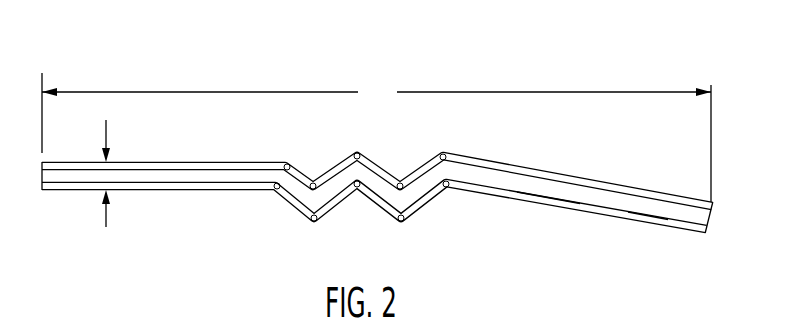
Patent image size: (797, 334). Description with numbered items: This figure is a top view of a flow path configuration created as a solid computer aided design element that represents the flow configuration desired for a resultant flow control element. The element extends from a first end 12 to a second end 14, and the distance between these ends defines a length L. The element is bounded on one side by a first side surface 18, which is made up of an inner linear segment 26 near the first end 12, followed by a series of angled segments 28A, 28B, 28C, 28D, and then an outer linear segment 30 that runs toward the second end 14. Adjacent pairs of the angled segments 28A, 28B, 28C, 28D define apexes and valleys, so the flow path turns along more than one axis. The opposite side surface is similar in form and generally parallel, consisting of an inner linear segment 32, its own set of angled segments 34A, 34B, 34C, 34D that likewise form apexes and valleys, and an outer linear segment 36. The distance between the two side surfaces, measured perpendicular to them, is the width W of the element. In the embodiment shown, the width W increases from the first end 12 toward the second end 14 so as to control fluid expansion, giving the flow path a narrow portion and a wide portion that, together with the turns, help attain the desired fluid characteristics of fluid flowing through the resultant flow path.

The first end 12 is at (383, 197).
The second end 14 is at (716, 231).
The first side surface 18 is at (606, 66).
The inner linear segment 26 is at (204, 162).
The angled segment 28A is at (305, 171).
The angled segment 28B is at (342, 162).
The angled segment 28C is at (376, 163).
The angled segment 28D is at (428, 159).
The outer linear segment 30 is at (625, 183).
The inner linear segment 32 is at (182, 192).
The angled segment 34A is at (293, 203).
The angled segment 34B is at (327, 216).
The angled segment 34C is at (379, 212).
The angled segment 34D is at (424, 214).
The outer linear segment 36 is at (622, 224).
The length L is at (376, 136).
The width W is at (115, 190).